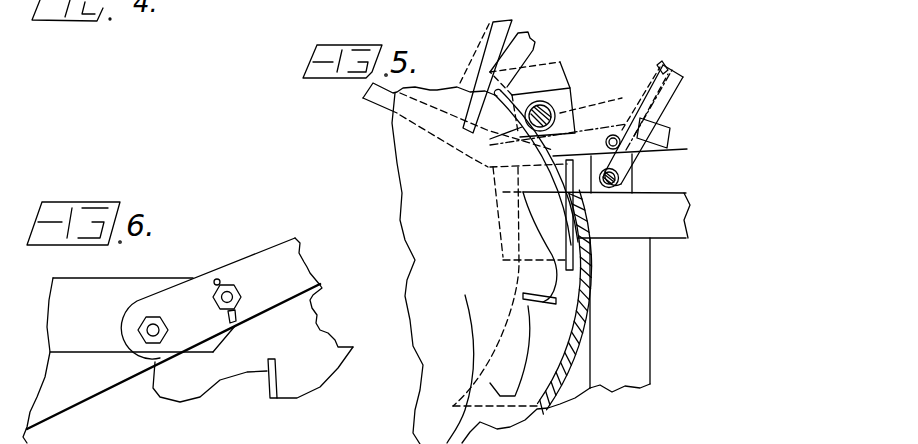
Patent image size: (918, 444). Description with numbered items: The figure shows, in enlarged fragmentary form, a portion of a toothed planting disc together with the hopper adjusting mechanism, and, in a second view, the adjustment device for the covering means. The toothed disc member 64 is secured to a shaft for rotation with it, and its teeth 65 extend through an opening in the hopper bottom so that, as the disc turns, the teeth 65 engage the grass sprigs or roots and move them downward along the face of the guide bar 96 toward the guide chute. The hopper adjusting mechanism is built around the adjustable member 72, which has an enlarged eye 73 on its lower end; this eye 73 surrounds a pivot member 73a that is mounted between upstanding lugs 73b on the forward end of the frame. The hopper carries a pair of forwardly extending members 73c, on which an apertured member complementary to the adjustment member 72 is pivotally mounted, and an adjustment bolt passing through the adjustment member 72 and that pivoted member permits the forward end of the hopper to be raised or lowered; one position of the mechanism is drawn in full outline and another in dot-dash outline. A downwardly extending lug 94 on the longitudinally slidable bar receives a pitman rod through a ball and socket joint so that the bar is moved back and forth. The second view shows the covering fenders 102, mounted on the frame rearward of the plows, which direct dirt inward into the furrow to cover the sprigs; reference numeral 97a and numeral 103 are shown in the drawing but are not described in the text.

In FIG. 5, the toothed disc member 64 is at (452, 228).
In FIG. 5, the teeth 65 is at (530, 308).
In FIG. 6, the teeth 65 is at (270, 394).
In FIG. 5, the adjustable member 72 is at (683, 88).
In FIG. 5, the enlarged eye 73 is at (620, 181).
In FIG. 5, the pivot member 73a is at (630, 170).
In FIG. 5, the upstanding lugs 73b is at (637, 162).
In FIG. 5, the forwardly extending members 73c is at (648, 135).
In FIG. 5, the downwardly extending lug 94 is at (552, 113).
In FIG. 5, the guide bar 96 is at (570, 267).
In FIG. 5, the plate 97a is at (541, 103).
In FIG. 6, the covering fenders 102 is at (63, 413).
In FIG. 6, the plate 103 is at (253, 263).